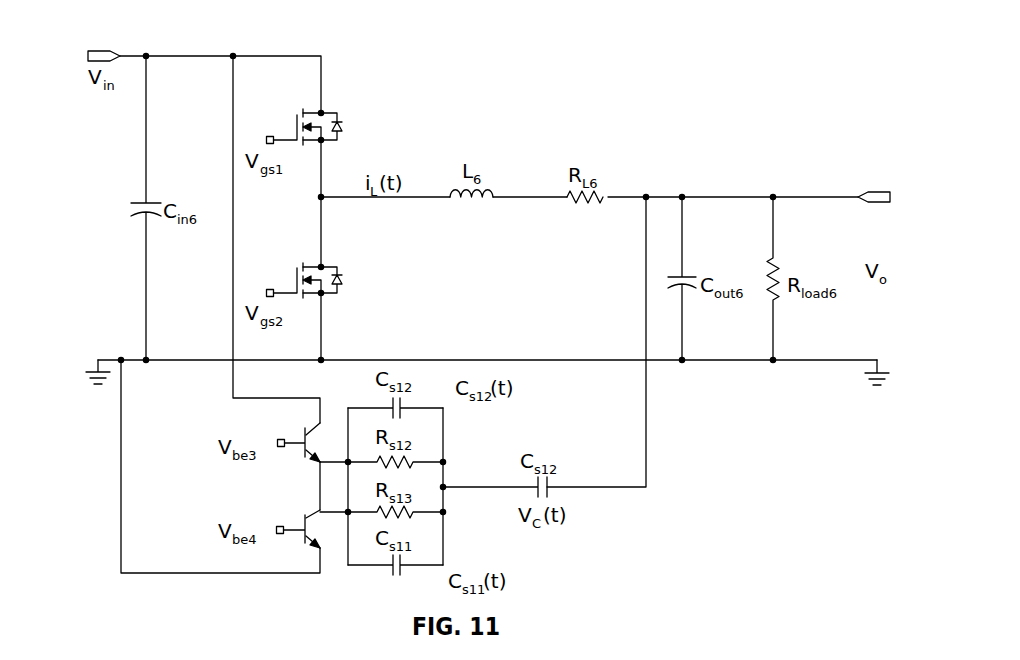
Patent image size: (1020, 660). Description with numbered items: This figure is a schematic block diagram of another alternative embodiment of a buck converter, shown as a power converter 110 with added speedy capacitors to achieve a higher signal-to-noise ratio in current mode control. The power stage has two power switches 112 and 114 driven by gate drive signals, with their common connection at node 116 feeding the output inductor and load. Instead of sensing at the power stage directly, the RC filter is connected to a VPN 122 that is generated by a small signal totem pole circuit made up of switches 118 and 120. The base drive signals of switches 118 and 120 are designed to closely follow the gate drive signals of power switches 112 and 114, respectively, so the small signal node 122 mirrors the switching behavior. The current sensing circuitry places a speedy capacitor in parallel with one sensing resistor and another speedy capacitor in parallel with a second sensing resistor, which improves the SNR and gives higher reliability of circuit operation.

The power converter 110 is at (163, 37).
The power switch 112 is at (326, 111).
The power switch 114 is at (326, 266).
The switching node 116 is at (318, 199).
The switch 118 is at (305, 432).
The switch 120 is at (305, 546).
The VPN 122 is at (318, 487).